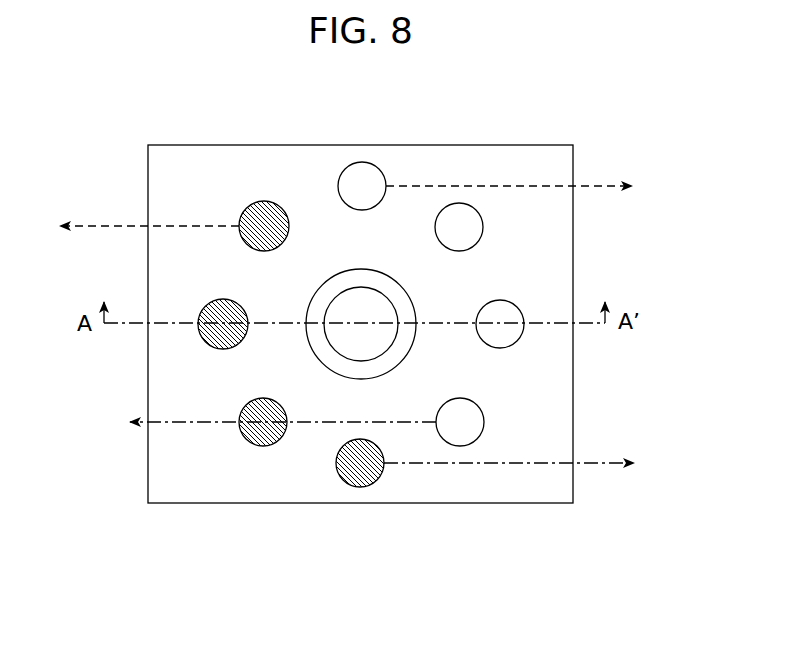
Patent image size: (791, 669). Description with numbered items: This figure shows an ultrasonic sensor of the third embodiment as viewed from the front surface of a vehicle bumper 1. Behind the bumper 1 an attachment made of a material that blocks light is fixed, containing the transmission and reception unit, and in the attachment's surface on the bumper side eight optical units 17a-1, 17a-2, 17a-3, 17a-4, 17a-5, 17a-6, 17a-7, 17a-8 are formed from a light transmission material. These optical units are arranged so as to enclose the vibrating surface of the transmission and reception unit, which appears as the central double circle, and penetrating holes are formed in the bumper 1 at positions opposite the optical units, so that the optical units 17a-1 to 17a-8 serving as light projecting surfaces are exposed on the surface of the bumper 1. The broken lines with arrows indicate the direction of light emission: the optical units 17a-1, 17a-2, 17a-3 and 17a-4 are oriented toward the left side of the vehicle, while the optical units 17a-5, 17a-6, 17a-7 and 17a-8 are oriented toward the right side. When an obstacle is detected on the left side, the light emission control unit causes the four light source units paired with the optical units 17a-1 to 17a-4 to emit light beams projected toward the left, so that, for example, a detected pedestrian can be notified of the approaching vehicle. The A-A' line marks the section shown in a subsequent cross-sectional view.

The bumper 1 is at (199, 152).
The optical unit 17a-1 is at (265, 208).
The optical unit 17a-2 is at (217, 308).
The optical unit 17a-3 is at (252, 402).
The optical unit 17a-4 is at (356, 475).
The optical unit 17a-5 is at (465, 422).
The optical unit 17a-6 is at (505, 316).
The optical unit 17a-7 is at (467, 218).
The optical unit 17a-8 is at (367, 175).